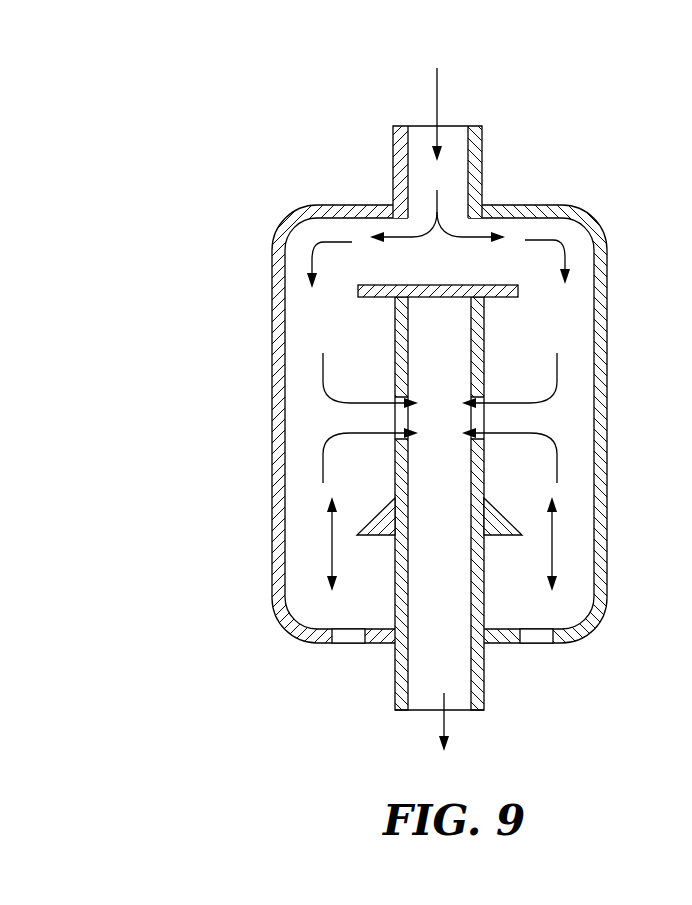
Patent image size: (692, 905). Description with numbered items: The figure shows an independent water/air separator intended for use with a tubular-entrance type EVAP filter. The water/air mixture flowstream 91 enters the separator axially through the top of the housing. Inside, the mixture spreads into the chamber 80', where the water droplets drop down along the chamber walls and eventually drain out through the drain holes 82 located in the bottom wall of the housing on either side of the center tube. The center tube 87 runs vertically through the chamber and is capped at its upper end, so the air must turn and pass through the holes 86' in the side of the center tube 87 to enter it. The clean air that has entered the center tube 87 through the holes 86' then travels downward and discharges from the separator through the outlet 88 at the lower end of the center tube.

The chamber 80' is at (468, 420).
The drain holes 82 is at (355, 644).
The holes 86' is at (439, 418).
The center tube 87 is at (453, 484).
The outlet 88 is at (435, 712).
The water/air mixture flowstream 91 is at (437, 82).